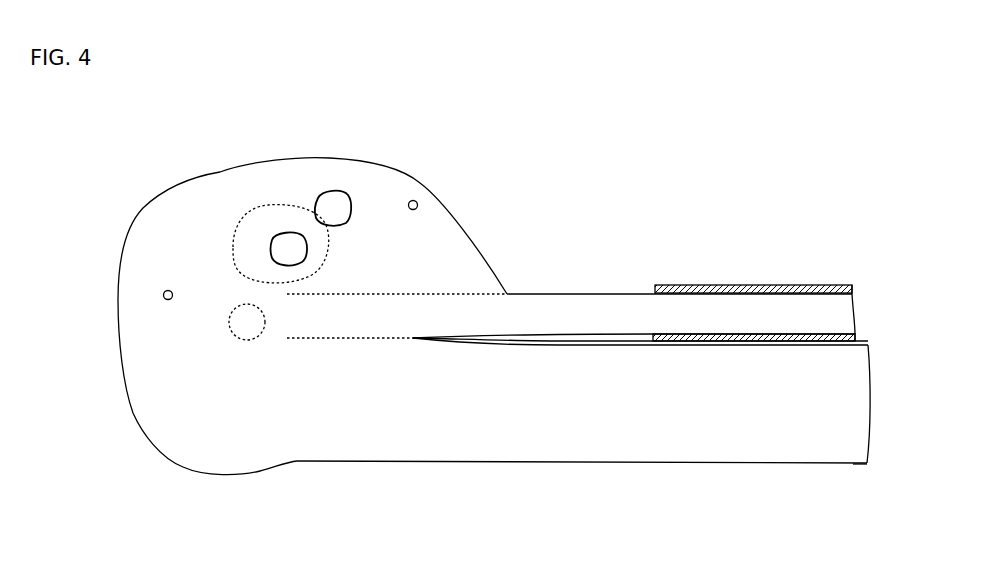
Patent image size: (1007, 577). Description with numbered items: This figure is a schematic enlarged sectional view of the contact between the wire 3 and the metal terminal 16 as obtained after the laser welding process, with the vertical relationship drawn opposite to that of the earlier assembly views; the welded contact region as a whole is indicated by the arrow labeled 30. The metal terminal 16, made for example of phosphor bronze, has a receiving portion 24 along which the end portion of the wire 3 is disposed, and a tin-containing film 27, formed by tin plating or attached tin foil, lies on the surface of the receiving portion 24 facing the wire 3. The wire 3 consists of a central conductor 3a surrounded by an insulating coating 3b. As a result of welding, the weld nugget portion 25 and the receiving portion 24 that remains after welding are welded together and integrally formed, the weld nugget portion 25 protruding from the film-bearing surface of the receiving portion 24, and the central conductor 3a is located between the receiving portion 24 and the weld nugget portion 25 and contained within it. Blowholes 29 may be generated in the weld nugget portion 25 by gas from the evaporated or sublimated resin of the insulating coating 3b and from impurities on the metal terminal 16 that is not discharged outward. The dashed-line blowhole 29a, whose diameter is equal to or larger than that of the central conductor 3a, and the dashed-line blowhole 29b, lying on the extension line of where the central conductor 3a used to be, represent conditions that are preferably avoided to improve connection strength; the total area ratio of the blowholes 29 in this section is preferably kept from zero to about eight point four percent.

The wire 3 is at (725, 298).
The central conductor 3a is at (848, 313).
The insulating coating 3b is at (853, 287).
The metal terminal 16 is at (853, 464).
The receiving portion 24 is at (620, 457).
The weld nugget portion 25 is at (199, 190).
The tin-containing film 27 is at (870, 341).
The blowholes 29 is at (288, 232).
The blowhole 29a is at (256, 207).
The blowhole 29b is at (228, 323).
The vibration unit 30 is at (312, 326).